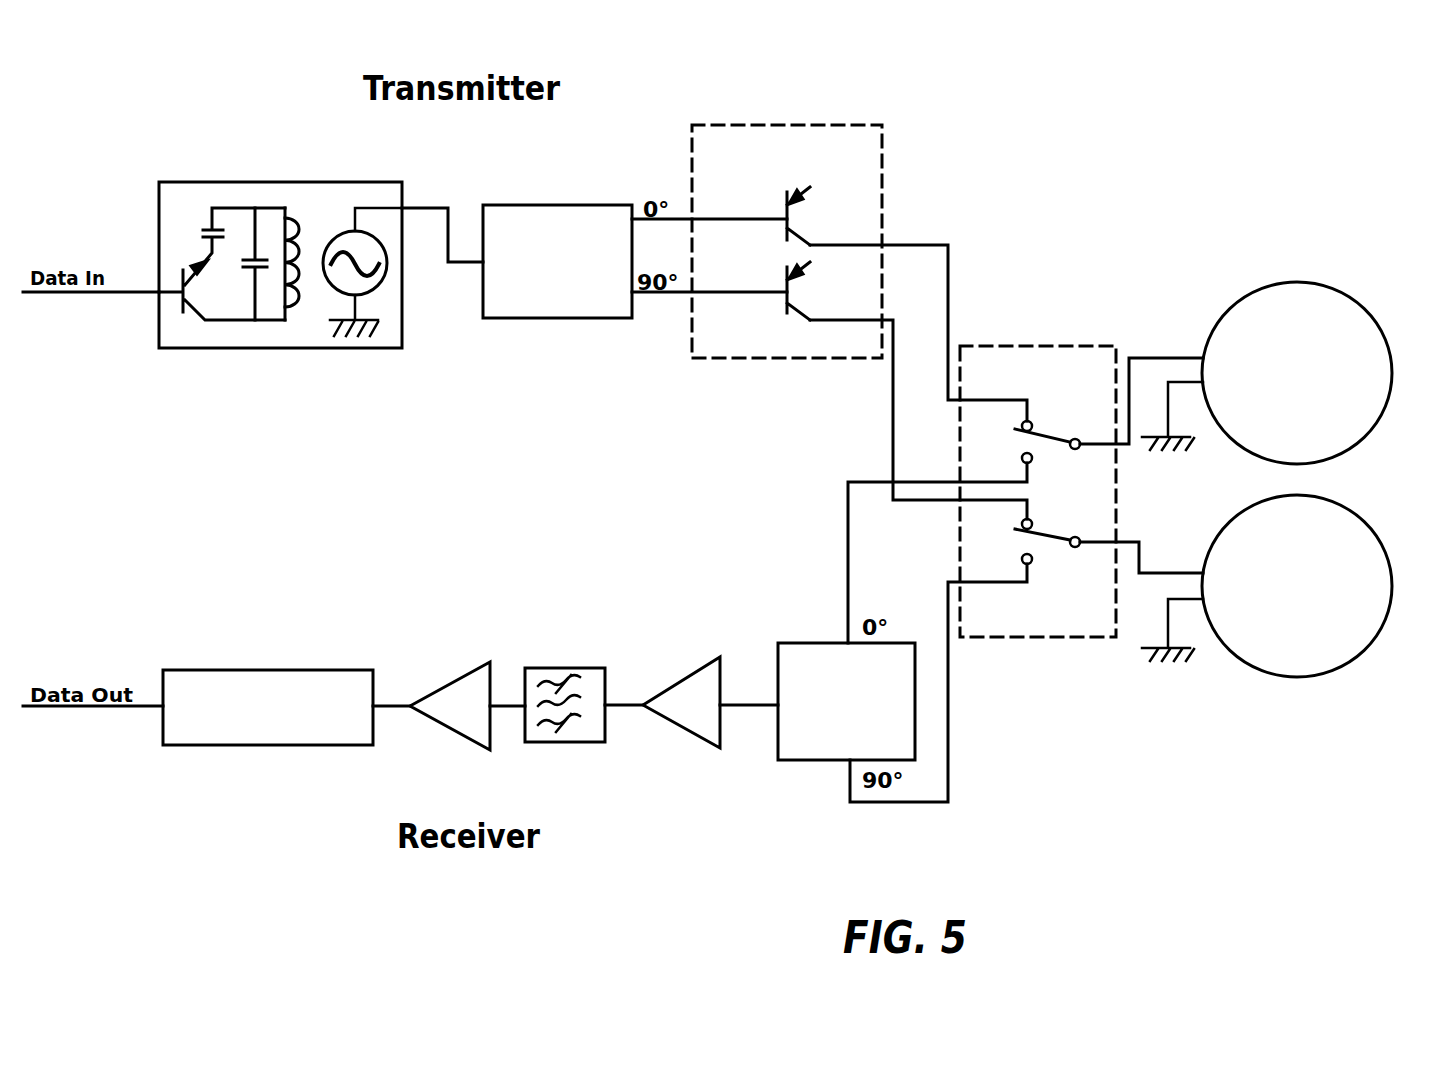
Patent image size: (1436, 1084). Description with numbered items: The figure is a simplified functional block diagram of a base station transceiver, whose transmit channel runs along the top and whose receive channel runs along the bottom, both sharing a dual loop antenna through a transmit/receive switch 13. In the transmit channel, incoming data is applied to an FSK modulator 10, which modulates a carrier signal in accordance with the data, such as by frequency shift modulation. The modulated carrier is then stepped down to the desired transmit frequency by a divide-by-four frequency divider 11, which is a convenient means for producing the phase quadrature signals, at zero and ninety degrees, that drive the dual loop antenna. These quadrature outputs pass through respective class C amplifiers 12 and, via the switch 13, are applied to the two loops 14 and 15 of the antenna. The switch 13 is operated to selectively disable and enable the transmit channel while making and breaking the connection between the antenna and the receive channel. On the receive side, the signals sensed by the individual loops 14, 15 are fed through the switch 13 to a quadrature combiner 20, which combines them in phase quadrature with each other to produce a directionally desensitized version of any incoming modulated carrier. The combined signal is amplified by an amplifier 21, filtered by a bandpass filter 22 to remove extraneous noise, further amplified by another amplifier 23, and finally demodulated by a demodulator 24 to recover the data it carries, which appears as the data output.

The modulator 10 is at (305, 237).
The frequency divider 11 is at (557, 238).
The class C amplifier 12 is at (816, 217).
The transmit/receive switch 13 is at (1038, 467).
The loop 14 is at (1277, 358).
The loop 15 is at (1284, 578).
The quadrature combiner 20 is at (816, 679).
The amplifier 21 is at (666, 685).
The bandpass filter 22 is at (548, 681).
The amplifier 23 is at (435, 687).
The demodulator 24 is at (268, 683).